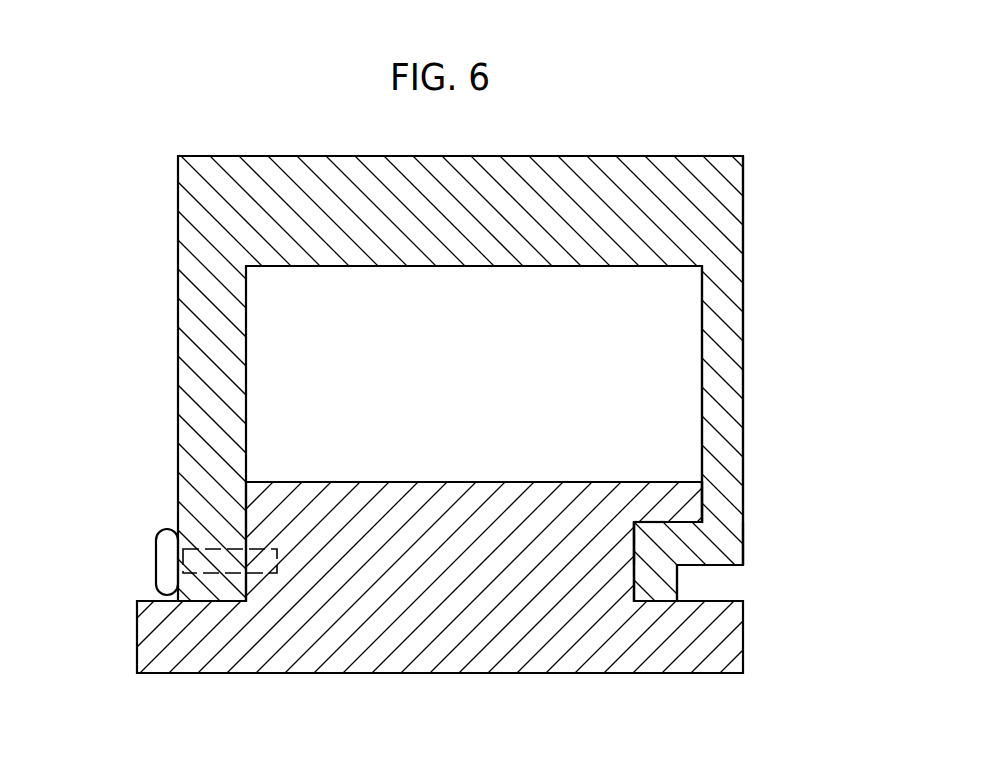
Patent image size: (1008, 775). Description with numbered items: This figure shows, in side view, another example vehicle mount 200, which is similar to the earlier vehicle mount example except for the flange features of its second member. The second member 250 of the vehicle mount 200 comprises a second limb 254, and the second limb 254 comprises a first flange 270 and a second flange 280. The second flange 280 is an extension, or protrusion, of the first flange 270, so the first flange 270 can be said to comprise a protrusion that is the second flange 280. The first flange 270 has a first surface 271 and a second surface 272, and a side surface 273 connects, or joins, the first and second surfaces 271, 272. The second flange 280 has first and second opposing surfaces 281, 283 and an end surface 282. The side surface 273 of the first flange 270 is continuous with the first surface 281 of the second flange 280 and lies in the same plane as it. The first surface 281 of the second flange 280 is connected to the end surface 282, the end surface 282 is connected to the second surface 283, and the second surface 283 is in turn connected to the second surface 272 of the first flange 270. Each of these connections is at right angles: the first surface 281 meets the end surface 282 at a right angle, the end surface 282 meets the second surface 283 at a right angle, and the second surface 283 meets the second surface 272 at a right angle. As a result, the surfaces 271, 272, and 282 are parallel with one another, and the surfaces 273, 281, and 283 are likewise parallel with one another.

The vehicle mount 200 is at (153, 178).
The second member 250 is at (565, 215).
The second limb 254 is at (722, 423).
The first flange 270 is at (688, 542).
The first surface 271 is at (673, 503).
The second surface 272 is at (713, 565).
The side surface 273 is at (634, 537).
The second flange 280 is at (653, 586).
The first surface 281 is at (632, 577).
The end surface 282 is at (658, 602).
The second surface 283 is at (678, 582).